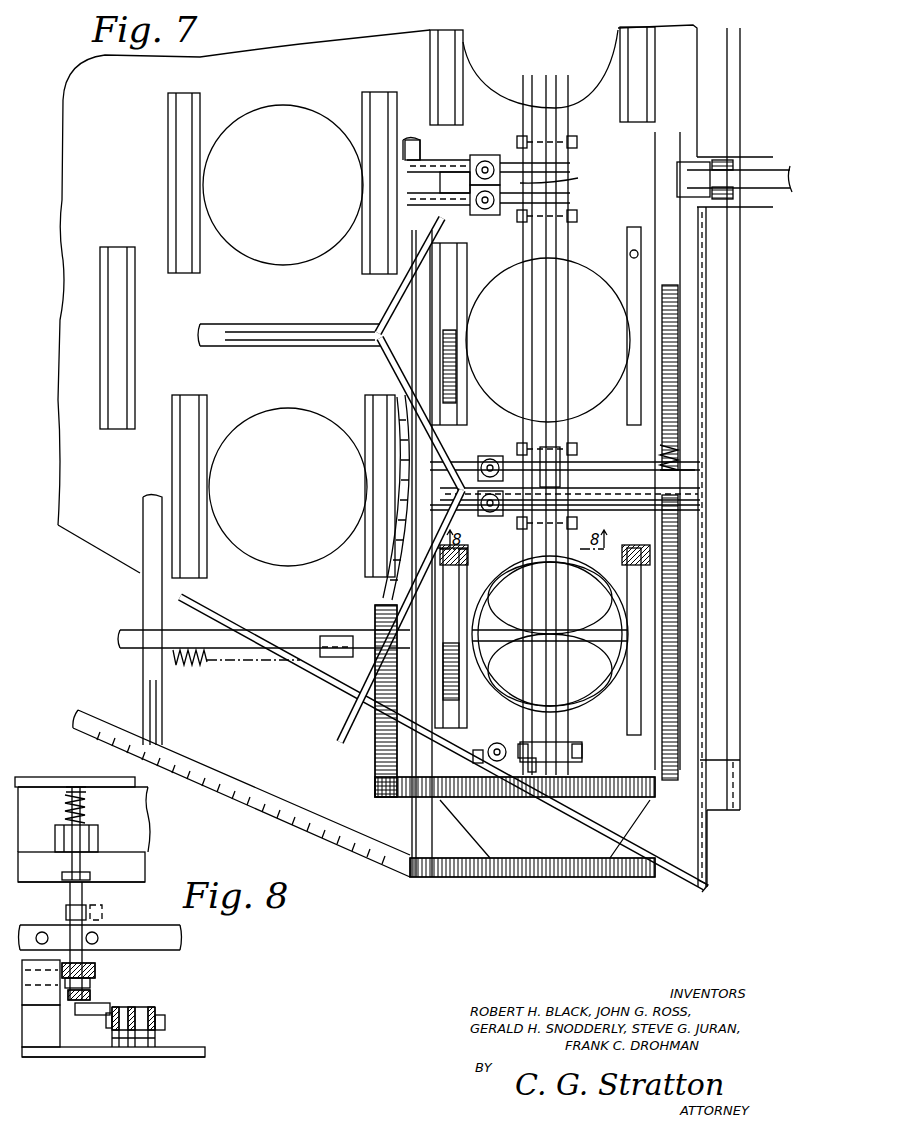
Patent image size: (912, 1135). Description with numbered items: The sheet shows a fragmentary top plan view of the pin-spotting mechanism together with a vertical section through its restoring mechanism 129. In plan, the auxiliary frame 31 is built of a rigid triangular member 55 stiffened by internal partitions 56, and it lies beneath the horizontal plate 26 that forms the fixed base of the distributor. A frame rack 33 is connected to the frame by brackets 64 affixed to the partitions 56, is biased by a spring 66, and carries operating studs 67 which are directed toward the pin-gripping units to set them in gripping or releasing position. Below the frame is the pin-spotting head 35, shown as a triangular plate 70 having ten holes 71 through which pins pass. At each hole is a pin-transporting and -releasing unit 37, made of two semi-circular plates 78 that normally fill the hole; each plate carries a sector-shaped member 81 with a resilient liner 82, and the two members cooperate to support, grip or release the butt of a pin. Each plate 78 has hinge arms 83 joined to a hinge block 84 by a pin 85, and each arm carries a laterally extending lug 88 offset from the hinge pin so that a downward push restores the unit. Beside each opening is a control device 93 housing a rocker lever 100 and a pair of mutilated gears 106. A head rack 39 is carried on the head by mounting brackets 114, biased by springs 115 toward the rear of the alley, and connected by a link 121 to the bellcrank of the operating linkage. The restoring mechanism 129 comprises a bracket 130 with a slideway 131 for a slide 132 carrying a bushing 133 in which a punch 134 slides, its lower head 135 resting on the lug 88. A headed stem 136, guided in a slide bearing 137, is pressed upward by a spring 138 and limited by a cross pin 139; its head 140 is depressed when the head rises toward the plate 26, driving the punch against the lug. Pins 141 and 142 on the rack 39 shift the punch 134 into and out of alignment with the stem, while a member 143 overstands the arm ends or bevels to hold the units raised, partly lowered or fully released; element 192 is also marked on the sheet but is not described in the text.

In FIG. 8, the horizontal plate 26 is at (48, 777).
In FIG. 7, the auxiliary frame 31 is at (357, 700).
In FIG. 8, the auxiliary frame 31 is at (146, 823).
In FIG. 7, the frame rack 33 is at (481, 889).
In FIG. 8, the frame rack 33 is at (156, 871).
In FIG. 7, the pin-spotting head 35 is at (108, 567).
In FIG. 8, the pin-spotting head 35 is at (155, 1067).
In FIG. 7, the pin-transporting and -releasing unit 37 is at (498, 712).
In FIG. 7, the head rack 39 is at (369, 772).
In FIG. 7, the rigid triangular member 55 is at (728, 553).
In FIG. 7, the internal partition 56 is at (372, 340).
In FIG. 7, the bracket 64 is at (677, 507).
In FIG. 7, the spring 66 is at (672, 297).
In FIG. 7, the operating stud 67 is at (468, 556).
In FIG. 7, the plate 70 is at (68, 466).
In FIG. 8, the plate 70 is at (203, 1047).
In FIG. 7, the hole 71 is at (283, 262).
In FIG. 7, the semi-circular plate 78 is at (598, 694).
In FIG. 7, the sector-shaped member 81 is at (510, 700).
In FIG. 7, the resilient liner 82 is at (615, 598).
In FIG. 7, the hinge arm 83 is at (560, 727).
In FIG. 8, the hinge arm 83 is at (158, 1010).
In FIG. 7, the hinge block 84 is at (565, 752).
In FIG. 8, the hinge block 84 is at (118, 1034).
In FIG. 7, the pin 85 is at (560, 498).
In FIG. 8, the pin 85 is at (167, 1022).
In FIG. 7, the lug 88 is at (522, 820).
In FIG. 8, the lug 88 is at (112, 1008).
In FIG. 7, the control device 93 is at (474, 387).
In FIG. 7, the lever 100 is at (470, 300).
In FIG. 7, the mutilated gear 106 is at (458, 360).
In FIG. 7, the mounting bracket 114 is at (335, 636).
In FIG. 7, the spring 115 is at (190, 666).
In FIG. 7, the link 121 is at (718, 186).
In FIG. 8, the mechanism 129 is at (104, 904).
In FIG. 8, the bracket 130 is at (42, 1040).
In FIG. 7, the slideway 131 is at (456, 203).
In FIG. 8, the slideway 131 is at (41, 992).
In FIG. 8, the slide 132 is at (98, 982).
In FIG. 8, the bushing 133 is at (92, 968).
In FIG. 7, the punch 134 is at (480, 175).
In FIG. 8, the punch 134 is at (72, 915).
In FIG. 8, the lower head 135 is at (90, 998).
In FIG. 8, the headed stem 136 is at (70, 865).
In FIG. 8, the slide bearing 137 is at (84, 840).
In FIG. 8, the spring 138 is at (88, 801).
In FIG. 8, the cross pin 139 is at (90, 873).
In FIG. 7, the head 140 is at (484, 460).
In FIG. 8, the head 140 is at (80, 790).
In FIG. 8, the pin 141 is at (100, 938).
In FIG. 8, the pin 142 is at (104, 922).
In FIG. 7, the member 143 is at (655, 468).
In FIG. 7, the stop 192 is at (470, 168).